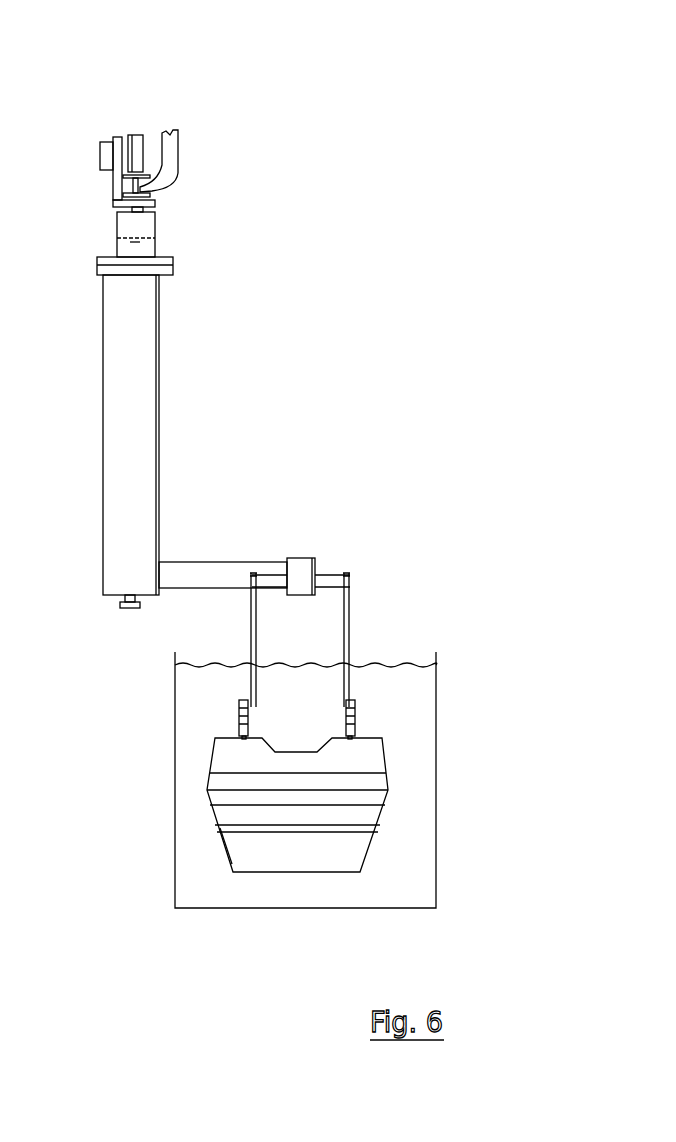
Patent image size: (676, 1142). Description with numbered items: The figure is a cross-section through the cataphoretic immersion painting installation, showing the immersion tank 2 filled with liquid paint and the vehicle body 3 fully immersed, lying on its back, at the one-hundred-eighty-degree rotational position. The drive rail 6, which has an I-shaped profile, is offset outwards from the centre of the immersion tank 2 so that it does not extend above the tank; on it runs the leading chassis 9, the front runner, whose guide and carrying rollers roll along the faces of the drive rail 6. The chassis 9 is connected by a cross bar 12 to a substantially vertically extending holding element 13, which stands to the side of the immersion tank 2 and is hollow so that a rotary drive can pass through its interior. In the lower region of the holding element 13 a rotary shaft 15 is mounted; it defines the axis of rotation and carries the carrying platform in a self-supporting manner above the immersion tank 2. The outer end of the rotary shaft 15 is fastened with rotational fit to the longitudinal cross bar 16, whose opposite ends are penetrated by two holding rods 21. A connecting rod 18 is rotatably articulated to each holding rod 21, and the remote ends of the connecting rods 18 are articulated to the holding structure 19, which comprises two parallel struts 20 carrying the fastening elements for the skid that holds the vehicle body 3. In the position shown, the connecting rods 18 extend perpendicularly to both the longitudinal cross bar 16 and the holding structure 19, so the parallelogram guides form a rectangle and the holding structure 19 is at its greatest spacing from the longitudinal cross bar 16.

The chassis 9 is at (138, 162).
The drive rail 6 is at (140, 192).
The cross bar 12 is at (142, 232).
The holding element 13 is at (133, 380).
The rotary shaft 15 is at (213, 577).
The longitudinal cross bar 16 is at (302, 580).
The holding rod 21 is at (330, 583).
The connecting rod 18 is at (248, 628).
The holding structure 19 is at (240, 718).
The parallel strut 20 is at (222, 733).
The immersion tank 2 is at (428, 812).
The vehicle body 3 is at (320, 872).